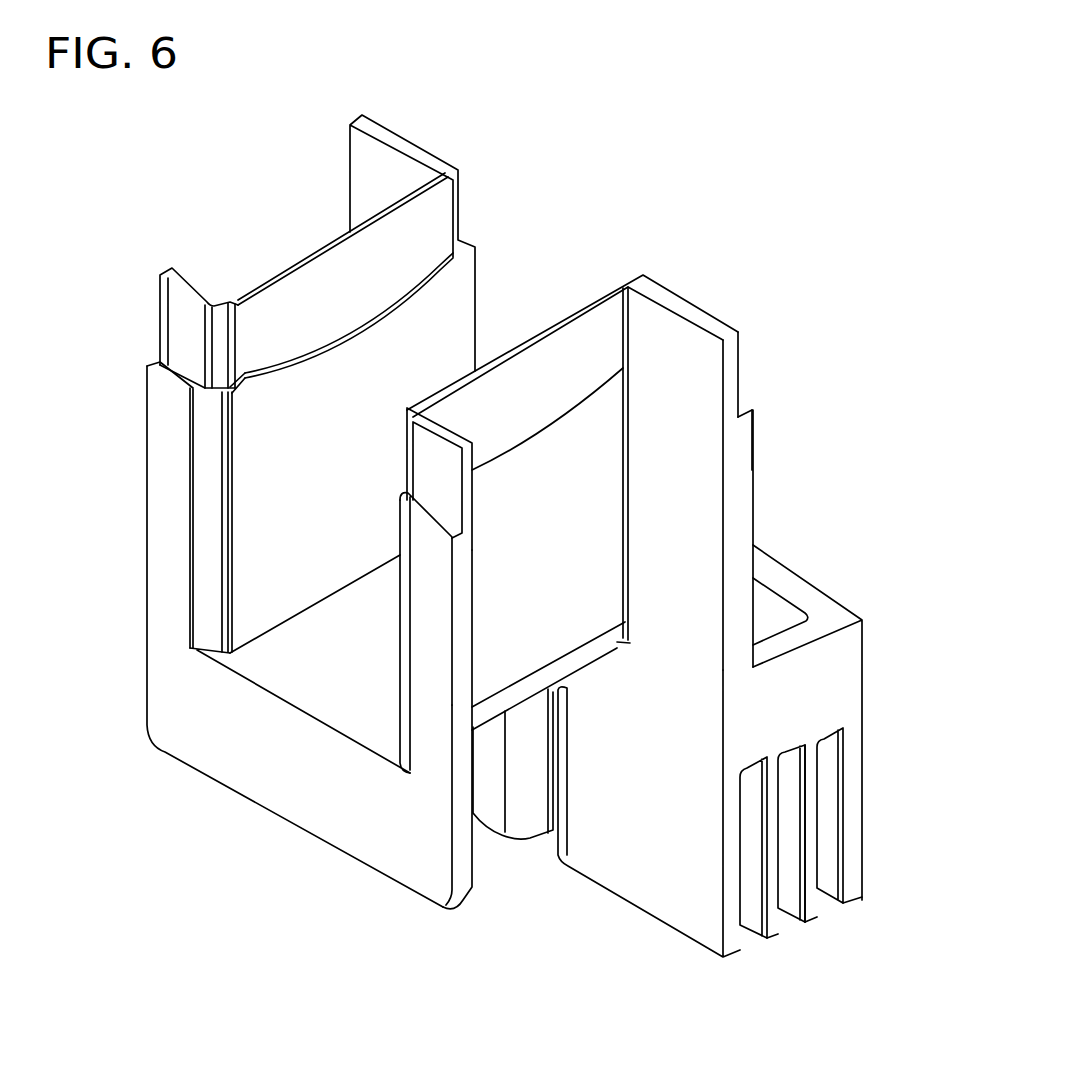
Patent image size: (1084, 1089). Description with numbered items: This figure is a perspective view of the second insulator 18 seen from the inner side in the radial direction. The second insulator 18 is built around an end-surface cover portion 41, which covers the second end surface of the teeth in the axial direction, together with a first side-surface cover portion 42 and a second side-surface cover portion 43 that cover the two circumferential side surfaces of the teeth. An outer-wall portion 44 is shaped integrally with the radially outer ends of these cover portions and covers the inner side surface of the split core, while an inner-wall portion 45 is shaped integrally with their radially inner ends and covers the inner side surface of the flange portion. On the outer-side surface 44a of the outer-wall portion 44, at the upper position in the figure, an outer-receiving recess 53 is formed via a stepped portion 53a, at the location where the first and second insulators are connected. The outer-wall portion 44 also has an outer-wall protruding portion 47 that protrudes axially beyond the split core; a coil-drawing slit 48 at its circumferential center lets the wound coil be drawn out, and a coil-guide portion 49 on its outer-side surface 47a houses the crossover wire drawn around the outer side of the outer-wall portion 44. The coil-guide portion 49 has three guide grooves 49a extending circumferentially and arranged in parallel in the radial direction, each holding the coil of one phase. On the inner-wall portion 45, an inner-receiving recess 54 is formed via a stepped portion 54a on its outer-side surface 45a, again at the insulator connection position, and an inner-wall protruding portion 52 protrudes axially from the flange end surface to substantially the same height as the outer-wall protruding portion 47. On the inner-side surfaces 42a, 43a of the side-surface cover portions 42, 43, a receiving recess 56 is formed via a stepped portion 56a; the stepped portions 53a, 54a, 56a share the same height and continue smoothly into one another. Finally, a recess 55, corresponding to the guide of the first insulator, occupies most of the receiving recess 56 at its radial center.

The second insulator 18 is at (560, 188).
The end-surface cover portion 41 is at (327, 690).
The first side-surface cover portion 42 is at (292, 442).
The inner-side surface 42a is at (290, 482).
The second side-surface cover portion 43 is at (590, 507).
The inner-side surface 43a is at (397, 682).
The outer-wall portion 44 is at (753, 535).
The outer-side surface 44a is at (753, 422).
The inner-wall portion 45 is at (167, 558).
The outer-side surface 45a is at (428, 578).
The outer-wall protruding portion 47 is at (640, 882).
The outer-side surface 47a is at (741, 893).
The coil-drawing slit 48 is at (558, 838).
The coil-guide portion 49 is at (862, 868).
The guide grooves 49a is at (827, 880).
The inner-wall protruding portion 52 is at (392, 867).
The outer-receiving recess 53 is at (738, 367).
The stepped portion 53a is at (742, 408).
The inner-receiving recess 54 is at (185, 333).
The stepped portion 54a is at (160, 364).
The recess 55 is at (357, 340).
The receiving recess 56 is at (382, 262).
The stepped portion 56a is at (245, 377).